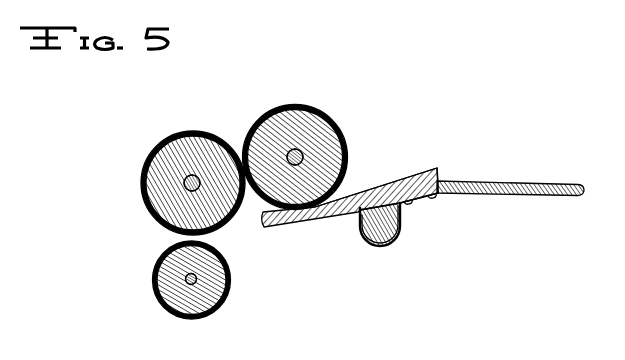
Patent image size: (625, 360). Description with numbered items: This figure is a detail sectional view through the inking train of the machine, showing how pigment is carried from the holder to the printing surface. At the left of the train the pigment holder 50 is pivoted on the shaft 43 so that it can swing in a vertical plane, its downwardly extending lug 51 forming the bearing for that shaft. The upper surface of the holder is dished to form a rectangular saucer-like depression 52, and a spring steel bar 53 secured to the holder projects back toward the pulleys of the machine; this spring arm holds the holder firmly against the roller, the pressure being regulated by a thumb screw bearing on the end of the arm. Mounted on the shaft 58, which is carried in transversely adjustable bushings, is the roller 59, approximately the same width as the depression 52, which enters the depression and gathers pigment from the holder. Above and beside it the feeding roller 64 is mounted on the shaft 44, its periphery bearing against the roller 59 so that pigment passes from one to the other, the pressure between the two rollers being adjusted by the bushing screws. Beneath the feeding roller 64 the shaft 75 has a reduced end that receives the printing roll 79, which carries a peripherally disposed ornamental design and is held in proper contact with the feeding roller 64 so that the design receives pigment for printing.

The shaft 43 is at (373, 244).
The shaft 44 is at (185, 187).
The pigment holder 50 is at (309, 227).
The downwardly extending lug 51 is at (399, 238).
The saucer-like depression 52 is at (350, 189).
The spring steel bar 53 is at (553, 196).
The shaft 58 is at (302, 154).
The roller 59 is at (275, 107).
The feeding roller 64 is at (152, 156).
The shaft 75 is at (186, 284).
The printing roll 79 is at (157, 263).